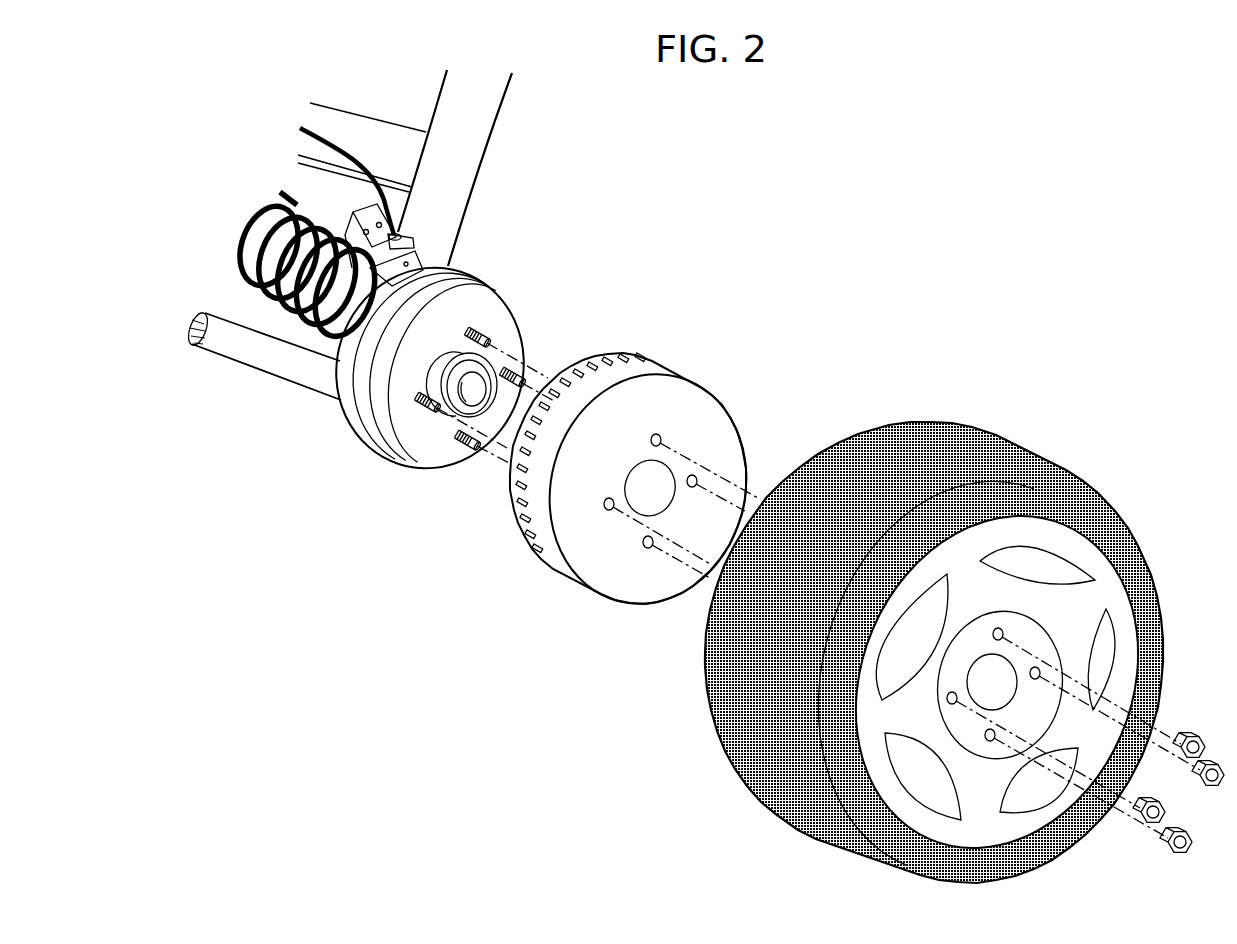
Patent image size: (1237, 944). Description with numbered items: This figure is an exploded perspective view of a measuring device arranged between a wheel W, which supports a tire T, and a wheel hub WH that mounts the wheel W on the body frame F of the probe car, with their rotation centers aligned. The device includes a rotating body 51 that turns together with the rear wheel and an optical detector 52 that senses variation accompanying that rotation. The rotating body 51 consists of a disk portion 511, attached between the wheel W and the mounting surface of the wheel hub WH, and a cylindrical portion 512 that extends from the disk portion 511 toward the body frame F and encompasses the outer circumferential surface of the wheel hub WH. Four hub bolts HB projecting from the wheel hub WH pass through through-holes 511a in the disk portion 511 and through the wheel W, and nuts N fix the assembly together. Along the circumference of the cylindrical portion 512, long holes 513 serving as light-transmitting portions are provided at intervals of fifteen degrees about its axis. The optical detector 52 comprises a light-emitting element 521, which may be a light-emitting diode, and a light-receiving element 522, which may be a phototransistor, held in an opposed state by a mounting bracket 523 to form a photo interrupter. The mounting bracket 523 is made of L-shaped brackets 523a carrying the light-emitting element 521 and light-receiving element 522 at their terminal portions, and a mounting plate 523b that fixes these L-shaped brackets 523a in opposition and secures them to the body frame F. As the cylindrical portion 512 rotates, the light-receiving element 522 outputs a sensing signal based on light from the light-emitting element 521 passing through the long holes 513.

The body frame F is at (500, 103).
The rotating body 51 is at (625, 474).
The disk portion 511 is at (735, 455).
The through-holes 511a is at (662, 436).
The cylindrical portion 512 is at (548, 556).
The long holes 513 is at (507, 485).
The optical detector 52 is at (380, 207).
The light-emitting element 521 is at (336, 358).
The light-receiving element 522 is at (400, 232).
The mounting bracket 523 is at (380, 213).
The L-shaped brackets 523a is at (406, 240).
The mounting plate 523b is at (360, 206).
The wheel hub WH is at (510, 306).
The hub bolts HB is at (489, 343).
The tire T is at (1015, 452).
The wheel W is at (1108, 587).
The nuts N is at (1197, 727).